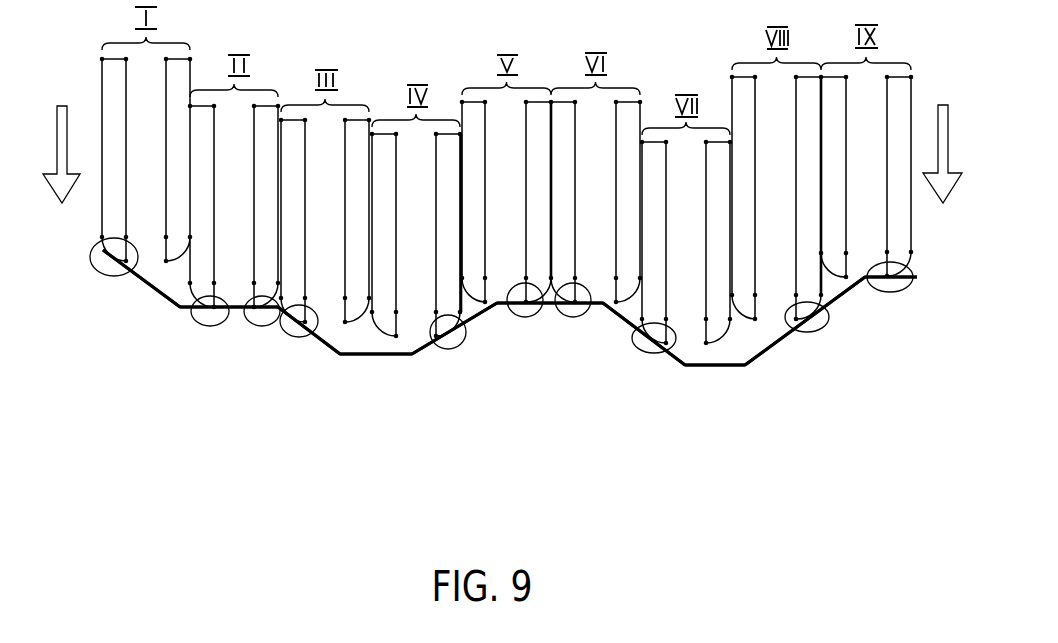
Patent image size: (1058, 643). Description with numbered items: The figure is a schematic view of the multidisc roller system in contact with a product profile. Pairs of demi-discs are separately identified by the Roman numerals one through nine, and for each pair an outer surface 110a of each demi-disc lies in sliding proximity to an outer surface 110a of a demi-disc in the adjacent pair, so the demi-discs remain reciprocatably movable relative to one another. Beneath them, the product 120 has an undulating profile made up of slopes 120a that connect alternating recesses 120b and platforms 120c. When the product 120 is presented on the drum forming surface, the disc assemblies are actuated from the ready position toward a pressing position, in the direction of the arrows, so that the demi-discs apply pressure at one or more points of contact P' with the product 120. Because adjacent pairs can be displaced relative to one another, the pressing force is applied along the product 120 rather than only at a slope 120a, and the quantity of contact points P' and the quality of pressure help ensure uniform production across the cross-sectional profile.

The outer surface of demi-disc 110a is at (912, 90).
The product 120 is at (837, 302).
The slope 120a is at (672, 360).
The recess 120b is at (723, 367).
The platform 120c is at (910, 283).
The point of contact P' is at (503, 328).